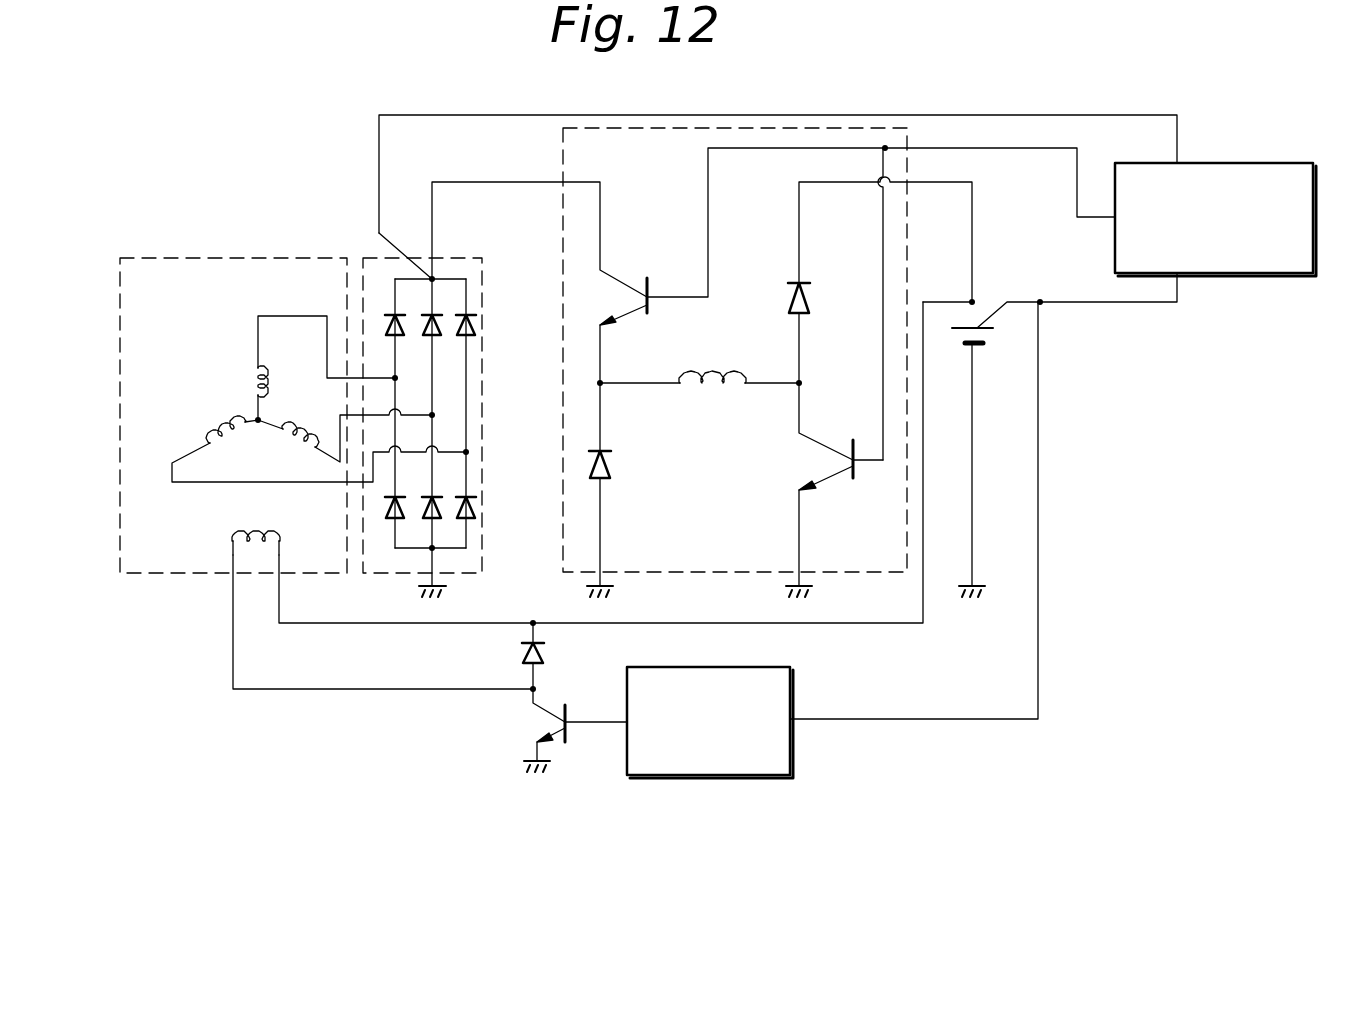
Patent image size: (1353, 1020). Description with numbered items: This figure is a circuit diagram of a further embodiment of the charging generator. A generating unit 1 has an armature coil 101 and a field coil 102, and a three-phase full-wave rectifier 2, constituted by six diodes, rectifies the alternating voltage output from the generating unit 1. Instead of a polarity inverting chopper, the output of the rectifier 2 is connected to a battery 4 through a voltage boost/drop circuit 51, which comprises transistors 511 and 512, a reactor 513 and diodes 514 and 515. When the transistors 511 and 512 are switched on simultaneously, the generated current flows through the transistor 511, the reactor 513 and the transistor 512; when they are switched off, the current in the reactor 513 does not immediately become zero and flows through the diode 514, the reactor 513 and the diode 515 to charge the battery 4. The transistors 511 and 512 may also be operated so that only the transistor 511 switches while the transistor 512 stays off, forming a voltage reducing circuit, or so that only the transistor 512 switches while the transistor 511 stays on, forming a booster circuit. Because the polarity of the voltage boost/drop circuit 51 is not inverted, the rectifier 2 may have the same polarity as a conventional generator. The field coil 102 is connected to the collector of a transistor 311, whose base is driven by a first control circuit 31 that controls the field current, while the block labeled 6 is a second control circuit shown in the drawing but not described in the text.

The generating unit 1 is at (183, 258).
The three-phase full-wave rectifier 2 is at (355, 257).
The battery 4 is at (990, 335).
The second control circuit 6 is at (1263, 163).
The first control circuit 31 is at (793, 758).
The voltage boost/drop circuit 51 is at (562, 254).
The armature coil 101 is at (236, 368).
The field coil 102 is at (238, 529).
The transistor 311 is at (537, 724).
The transistor 511 is at (623, 281).
The transistor 512 is at (824, 460).
The reactor 513 is at (716, 373).
The diode 514 is at (612, 462).
The diode 515 is at (785, 292).